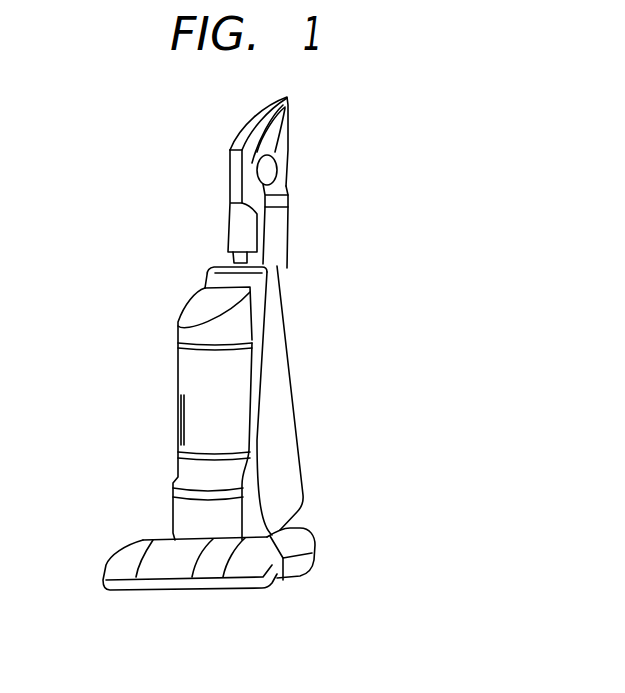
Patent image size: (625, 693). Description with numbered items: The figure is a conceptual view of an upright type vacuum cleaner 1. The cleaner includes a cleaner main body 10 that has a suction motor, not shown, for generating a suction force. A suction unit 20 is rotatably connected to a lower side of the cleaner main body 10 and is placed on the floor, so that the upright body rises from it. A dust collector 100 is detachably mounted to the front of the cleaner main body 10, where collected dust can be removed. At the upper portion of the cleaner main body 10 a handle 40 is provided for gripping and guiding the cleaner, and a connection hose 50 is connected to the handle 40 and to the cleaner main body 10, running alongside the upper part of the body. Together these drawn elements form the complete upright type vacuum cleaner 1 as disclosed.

The upright type vacuum cleaner 1 is at (60, 187).
The cleaner main body 10 is at (278, 373).
The suction unit 20 is at (243, 570).
The handle 40 is at (250, 133).
The connection hose 50 is at (278, 228).
The dust collector 100 is at (170, 325).